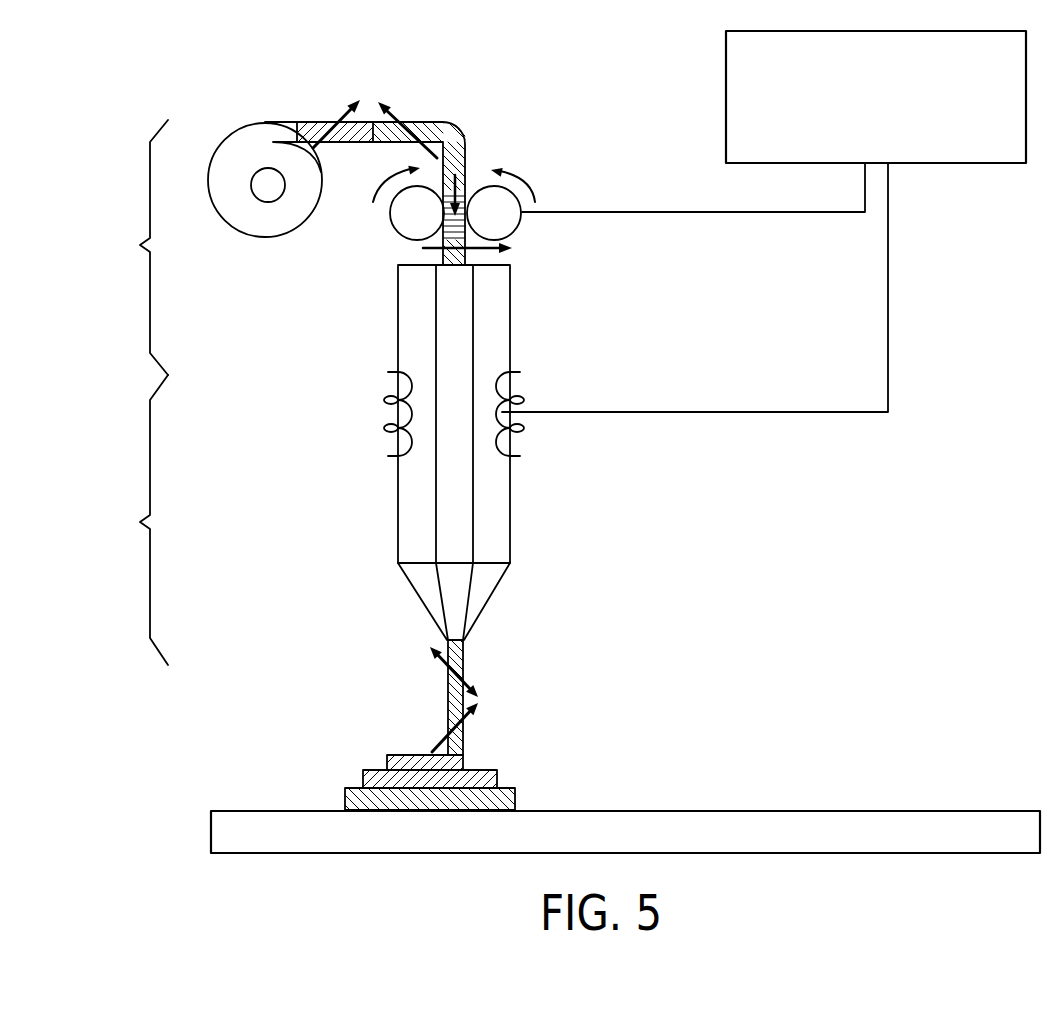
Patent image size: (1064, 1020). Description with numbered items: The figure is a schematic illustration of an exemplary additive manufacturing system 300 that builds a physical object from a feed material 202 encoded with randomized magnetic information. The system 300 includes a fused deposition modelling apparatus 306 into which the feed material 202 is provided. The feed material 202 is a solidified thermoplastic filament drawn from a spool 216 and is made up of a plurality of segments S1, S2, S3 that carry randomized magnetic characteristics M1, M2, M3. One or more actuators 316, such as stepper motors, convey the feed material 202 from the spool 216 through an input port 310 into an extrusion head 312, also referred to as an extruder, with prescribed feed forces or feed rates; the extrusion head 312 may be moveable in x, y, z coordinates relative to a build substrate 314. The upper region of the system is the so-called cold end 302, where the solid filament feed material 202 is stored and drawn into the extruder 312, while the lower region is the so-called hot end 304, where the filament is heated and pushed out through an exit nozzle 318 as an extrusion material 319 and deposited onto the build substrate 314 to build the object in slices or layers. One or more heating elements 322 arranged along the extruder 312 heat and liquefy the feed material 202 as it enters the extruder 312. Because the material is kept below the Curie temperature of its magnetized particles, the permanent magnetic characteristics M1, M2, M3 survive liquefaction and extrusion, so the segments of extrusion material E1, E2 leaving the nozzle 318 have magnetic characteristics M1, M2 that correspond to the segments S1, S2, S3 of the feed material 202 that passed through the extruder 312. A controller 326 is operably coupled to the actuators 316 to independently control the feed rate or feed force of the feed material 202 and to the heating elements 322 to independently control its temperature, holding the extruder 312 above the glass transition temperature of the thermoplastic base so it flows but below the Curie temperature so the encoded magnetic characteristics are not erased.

The additive manufacturing system 300 is at (92, 86).
The cold end 302 is at (133, 247).
The hot end 304 is at (134, 520).
The fused deposition modelling apparatus 306 is at (520, 120).
The feed material 202 is at (428, 118).
The spool 216 is at (248, 120).
The input port 310 is at (443, 260).
The extrusion head 312 is at (398, 302).
The build substrate 314 is at (660, 810).
The actuators 316 is at (417, 202).
The exit nozzle 318 is at (467, 647).
The extrusion material 319 is at (440, 642).
The heating elements 322 is at (498, 387).
The controller 326 is at (891, 112).
The first feed material segment S1 is at (308, 120).
The second feed material segment S2 is at (447, 122).
The third feed material segment S3 is at (454, 265).
The first extrusion material segment E1 is at (462, 672).
The second extrusion material segment E2 is at (462, 740).
The first magnetic characteristic M1 is at (395, 389).
The second magnetic characteristic M2 is at (428, 415).
The third magnetic characteristic M3 is at (480, 249).